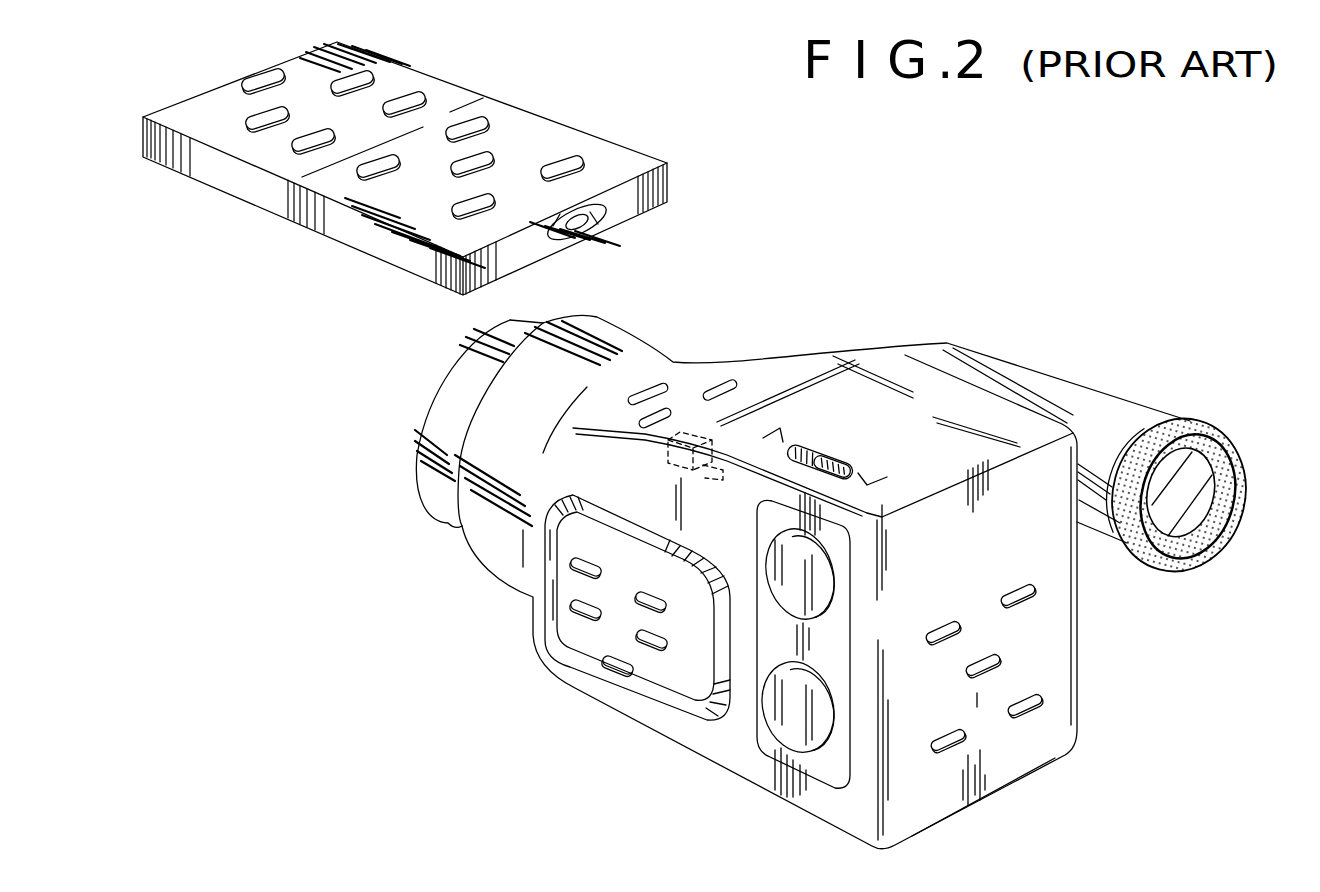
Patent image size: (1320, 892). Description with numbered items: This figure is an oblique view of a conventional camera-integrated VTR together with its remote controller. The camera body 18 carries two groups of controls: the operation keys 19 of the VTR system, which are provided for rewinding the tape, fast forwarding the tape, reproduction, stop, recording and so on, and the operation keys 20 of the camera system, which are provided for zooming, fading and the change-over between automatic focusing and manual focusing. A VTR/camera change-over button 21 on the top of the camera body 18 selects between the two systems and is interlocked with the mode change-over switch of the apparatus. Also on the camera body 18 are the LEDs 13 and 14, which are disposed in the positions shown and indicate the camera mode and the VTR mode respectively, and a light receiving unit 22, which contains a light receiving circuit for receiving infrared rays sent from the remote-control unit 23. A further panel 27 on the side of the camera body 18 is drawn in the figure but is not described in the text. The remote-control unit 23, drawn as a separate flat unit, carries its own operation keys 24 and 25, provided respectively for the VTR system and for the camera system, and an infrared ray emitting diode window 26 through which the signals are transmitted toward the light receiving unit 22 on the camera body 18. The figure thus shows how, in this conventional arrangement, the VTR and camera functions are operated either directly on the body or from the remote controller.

The LED 13 is at (655, 388).
The LED 14 is at (725, 385).
The camera body 18 is at (839, 572).
The operation keys of VTR system 19 is at (1057, 682).
The operation keys of camera system 20 is at (682, 665).
The VTR/camera change-over button 21 is at (850, 462).
The light receiving unit 22 is at (740, 437).
The remote-control unit 23 is at (418, 158).
The operation keys for VTR system 24 is at (543, 133).
The operation keys for camera system 25 is at (437, 87).
The infrared ray emitting diode window 26 is at (565, 243).
The speaker/microphone panel 27 is at (823, 772).